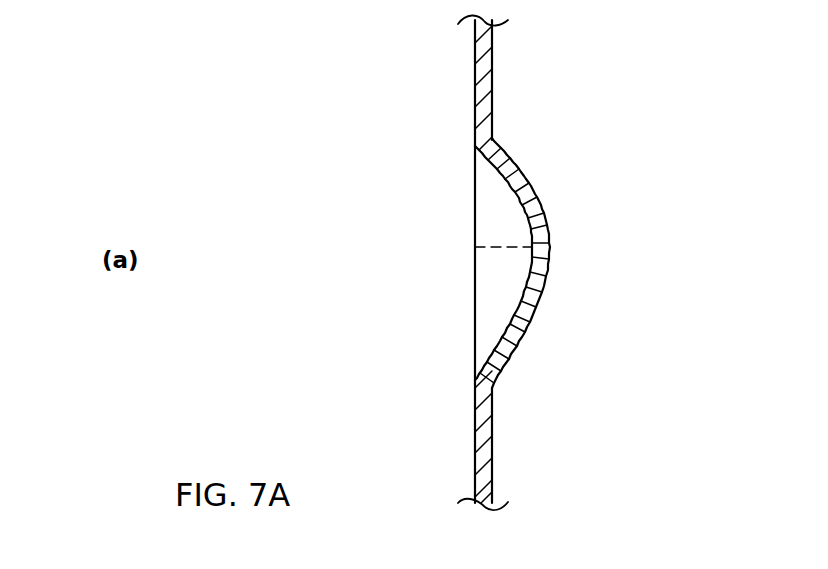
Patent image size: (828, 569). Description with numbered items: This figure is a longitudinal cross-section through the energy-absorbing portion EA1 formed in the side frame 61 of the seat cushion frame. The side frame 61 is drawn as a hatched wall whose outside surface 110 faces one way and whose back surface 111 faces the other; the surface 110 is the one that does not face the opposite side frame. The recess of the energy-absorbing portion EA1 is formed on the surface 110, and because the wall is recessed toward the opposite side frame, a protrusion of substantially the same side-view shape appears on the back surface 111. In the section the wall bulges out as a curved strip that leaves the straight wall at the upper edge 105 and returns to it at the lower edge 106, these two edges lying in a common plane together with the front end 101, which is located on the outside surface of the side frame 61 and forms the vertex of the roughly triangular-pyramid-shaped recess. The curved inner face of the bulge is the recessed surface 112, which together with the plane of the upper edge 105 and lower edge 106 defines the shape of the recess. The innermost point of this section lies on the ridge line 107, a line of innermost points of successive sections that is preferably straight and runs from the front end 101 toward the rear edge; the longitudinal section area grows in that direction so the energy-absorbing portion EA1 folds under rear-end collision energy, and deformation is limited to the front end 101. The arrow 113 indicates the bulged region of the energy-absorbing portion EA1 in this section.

The side frame 61 is at (385, 45).
The energy-absorbing portion EA1 is at (268, 225).
The front end 101 is at (475, 243).
The upper edge 105 is at (475, 177).
The lower edge 106 is at (475, 330).
The ridge line 107 is at (508, 245).
The surface 110 is at (475, 458).
The surface 111 is at (493, 445).
The recessed surface 112 is at (493, 305).
The bulge portion 113 is at (533, 162).